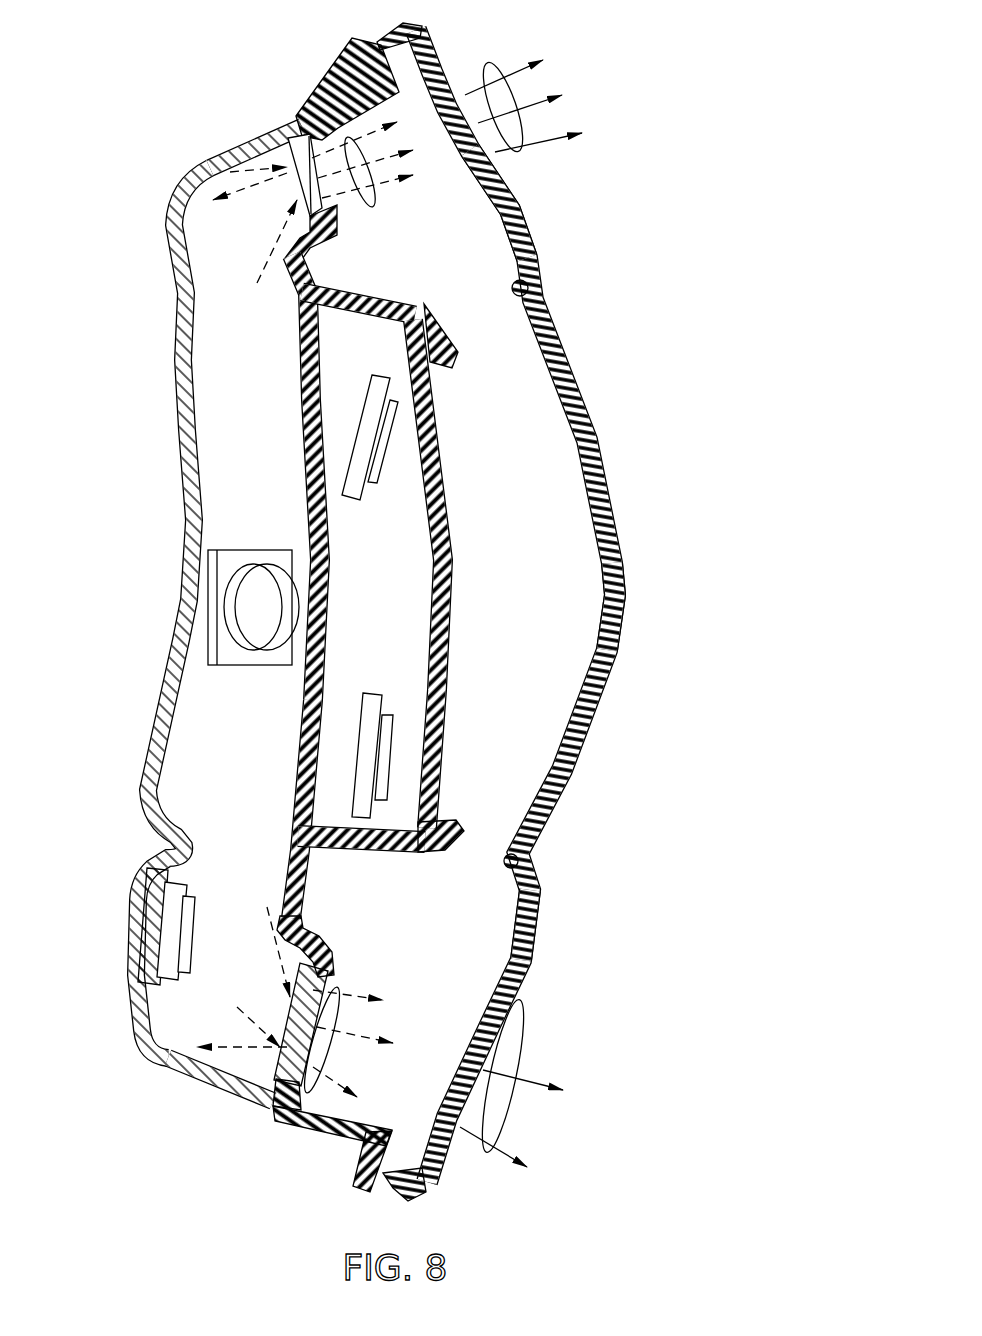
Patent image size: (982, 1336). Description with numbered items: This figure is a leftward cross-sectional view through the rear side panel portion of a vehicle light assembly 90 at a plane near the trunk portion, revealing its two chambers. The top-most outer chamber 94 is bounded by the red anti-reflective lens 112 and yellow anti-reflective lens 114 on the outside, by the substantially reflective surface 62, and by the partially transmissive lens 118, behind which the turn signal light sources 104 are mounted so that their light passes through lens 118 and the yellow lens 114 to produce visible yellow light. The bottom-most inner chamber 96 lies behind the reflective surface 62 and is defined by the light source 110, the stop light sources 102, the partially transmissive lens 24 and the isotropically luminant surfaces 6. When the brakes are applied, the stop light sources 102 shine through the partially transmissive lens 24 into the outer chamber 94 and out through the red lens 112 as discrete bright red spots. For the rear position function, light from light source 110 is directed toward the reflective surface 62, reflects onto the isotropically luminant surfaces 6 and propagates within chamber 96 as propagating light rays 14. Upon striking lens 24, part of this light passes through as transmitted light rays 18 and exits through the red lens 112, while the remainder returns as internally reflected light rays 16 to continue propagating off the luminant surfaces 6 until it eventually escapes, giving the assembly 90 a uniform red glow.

The isotropically luminant surfaces 6 is at (285, 145).
The propagating light rays 14 is at (253, 167).
The internally reflected light rays 16 is at (252, 187).
The transmitted light rays 18 is at (483, 67).
The partially transmissive lens 24 is at (330, 143).
The substantially reflective surface 62 is at (293, 350).
The vehicle light assembly 90 is at (668, 188).
The top-most (outer) chamber 94 is at (530, 477).
The bottom-most (inner) chamber 96 is at (218, 312).
The stop light sources 102 is at (193, 920).
The turn signal light sources 104 is at (383, 373).
The light source 110 is at (230, 550).
The red, anti-reflective lens 112 is at (527, 213).
The yellow, anti-reflective lens 114 is at (623, 597).
The partially transmissive lens 118 is at (450, 697).